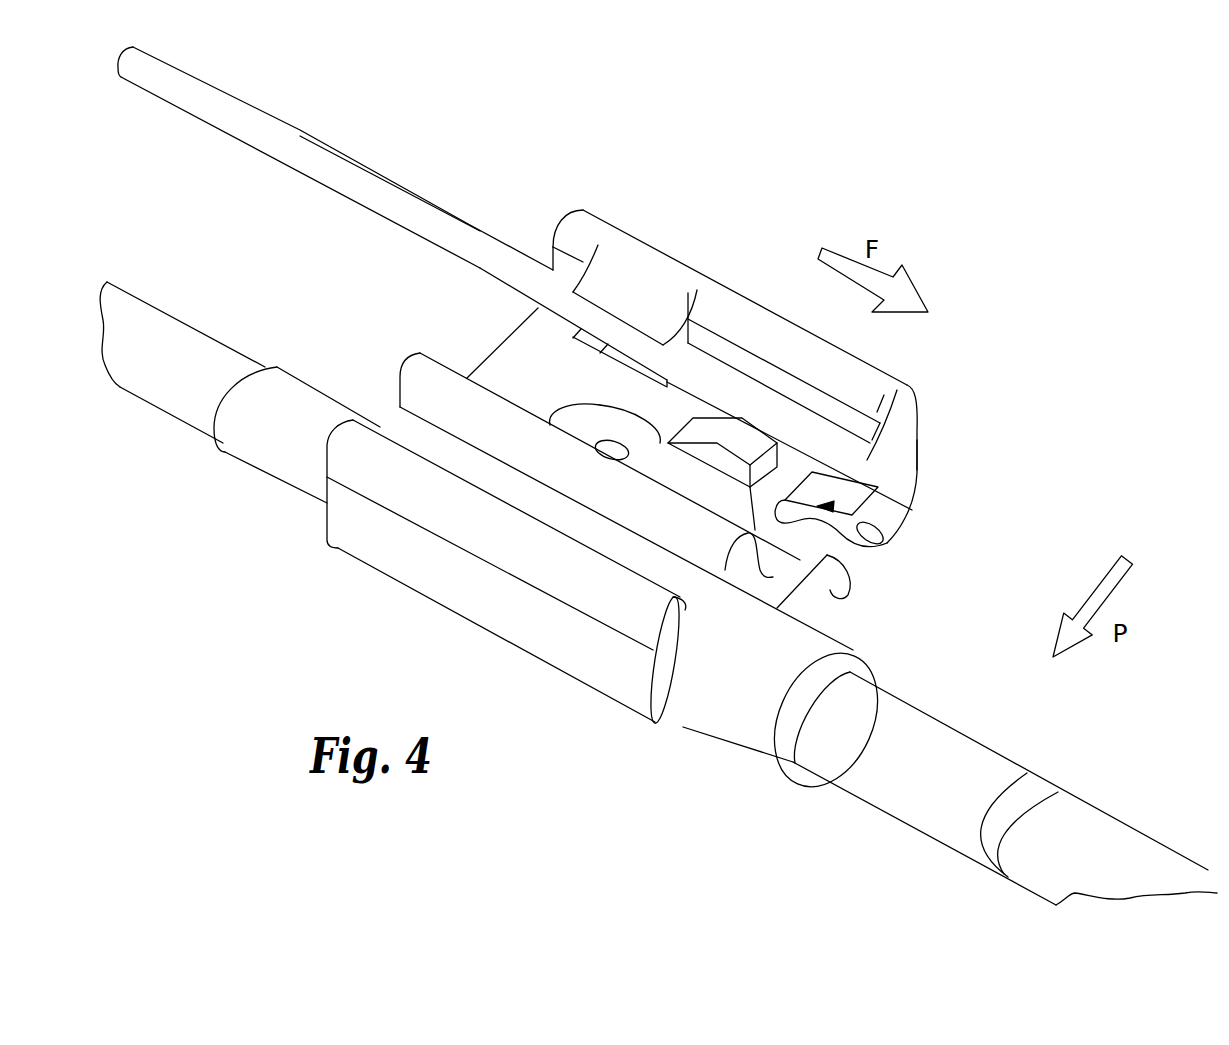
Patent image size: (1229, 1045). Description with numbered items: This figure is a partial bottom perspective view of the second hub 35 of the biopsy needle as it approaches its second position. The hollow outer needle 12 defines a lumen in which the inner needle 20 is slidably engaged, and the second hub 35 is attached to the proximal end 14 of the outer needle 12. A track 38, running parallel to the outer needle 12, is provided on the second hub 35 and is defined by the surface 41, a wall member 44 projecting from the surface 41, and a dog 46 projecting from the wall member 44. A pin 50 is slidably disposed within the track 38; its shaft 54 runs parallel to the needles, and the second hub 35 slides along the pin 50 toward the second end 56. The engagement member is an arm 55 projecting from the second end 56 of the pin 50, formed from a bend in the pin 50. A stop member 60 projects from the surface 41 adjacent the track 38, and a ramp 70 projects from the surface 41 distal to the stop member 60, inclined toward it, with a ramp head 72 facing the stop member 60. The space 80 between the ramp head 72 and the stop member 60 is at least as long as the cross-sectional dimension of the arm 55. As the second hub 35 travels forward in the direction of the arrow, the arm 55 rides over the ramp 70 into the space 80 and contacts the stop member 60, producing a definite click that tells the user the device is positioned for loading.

The hollow outer needle 12 is at (900, 866).
The proximal end 14 is at (253, 470).
The inner needle 20 is at (142, 440).
The second hub 35 is at (457, 615).
The track 38 is at (918, 457).
The surface 41 is at (523, 360).
The wall member 44 is at (917, 418).
The dog 46 is at (613, 288).
The pin 50 is at (345, 118).
The shaft 54 is at (405, 183).
The arm 55 is at (897, 513).
The second end 56 is at (900, 385).
The stop member 60 is at (830, 578).
The ramp 70 is at (885, 547).
The ramp head 72 is at (828, 533).
The space 80 is at (788, 470).